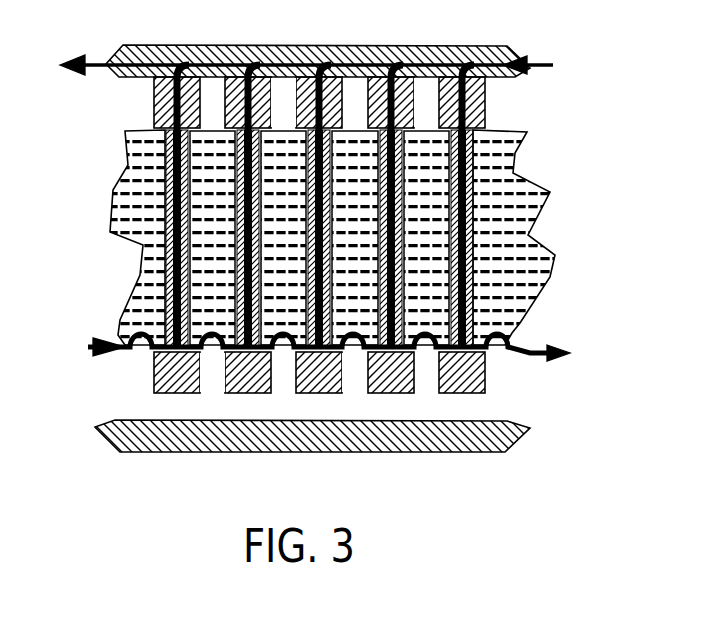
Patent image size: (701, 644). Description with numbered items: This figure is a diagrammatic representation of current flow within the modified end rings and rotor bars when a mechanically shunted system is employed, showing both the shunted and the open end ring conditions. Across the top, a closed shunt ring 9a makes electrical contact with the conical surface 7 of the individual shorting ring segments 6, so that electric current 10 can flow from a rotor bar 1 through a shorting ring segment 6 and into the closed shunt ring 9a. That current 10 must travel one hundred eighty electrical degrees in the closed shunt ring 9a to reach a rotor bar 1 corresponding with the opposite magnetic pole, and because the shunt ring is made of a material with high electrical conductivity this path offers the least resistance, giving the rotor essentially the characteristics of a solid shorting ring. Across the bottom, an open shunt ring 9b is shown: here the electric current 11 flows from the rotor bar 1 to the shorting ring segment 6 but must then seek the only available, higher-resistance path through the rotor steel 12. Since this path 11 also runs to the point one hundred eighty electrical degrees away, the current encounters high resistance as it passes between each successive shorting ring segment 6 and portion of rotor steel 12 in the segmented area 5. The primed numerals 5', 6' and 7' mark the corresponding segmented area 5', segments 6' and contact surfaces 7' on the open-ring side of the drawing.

The rotor bar 1 is at (262, 214).
The segmented area 5 is at (283, 103).
The gap 5' is at (283, 385).
The shorting ring segment 6 is at (162, 102).
The end block 6' is at (321, 240).
The conical surface 7 is at (426, 102).
The block 7' is at (327, 386).
The closed shunt ring 9a is at (299, 46).
The open shunt ring 9b is at (410, 453).
The electric current 10 is at (160, 117).
The electric current 11 is at (211, 326).
The rotor steel 12 is at (137, 283).